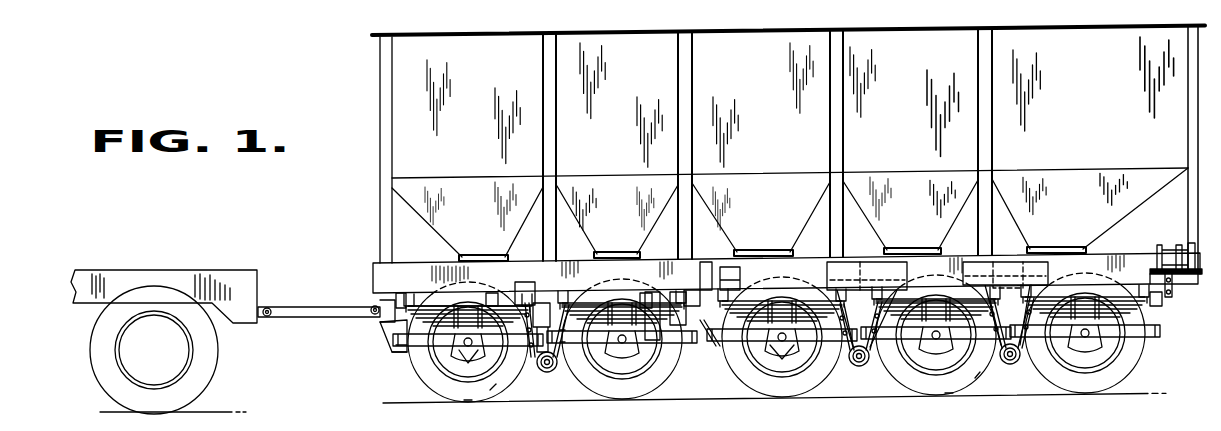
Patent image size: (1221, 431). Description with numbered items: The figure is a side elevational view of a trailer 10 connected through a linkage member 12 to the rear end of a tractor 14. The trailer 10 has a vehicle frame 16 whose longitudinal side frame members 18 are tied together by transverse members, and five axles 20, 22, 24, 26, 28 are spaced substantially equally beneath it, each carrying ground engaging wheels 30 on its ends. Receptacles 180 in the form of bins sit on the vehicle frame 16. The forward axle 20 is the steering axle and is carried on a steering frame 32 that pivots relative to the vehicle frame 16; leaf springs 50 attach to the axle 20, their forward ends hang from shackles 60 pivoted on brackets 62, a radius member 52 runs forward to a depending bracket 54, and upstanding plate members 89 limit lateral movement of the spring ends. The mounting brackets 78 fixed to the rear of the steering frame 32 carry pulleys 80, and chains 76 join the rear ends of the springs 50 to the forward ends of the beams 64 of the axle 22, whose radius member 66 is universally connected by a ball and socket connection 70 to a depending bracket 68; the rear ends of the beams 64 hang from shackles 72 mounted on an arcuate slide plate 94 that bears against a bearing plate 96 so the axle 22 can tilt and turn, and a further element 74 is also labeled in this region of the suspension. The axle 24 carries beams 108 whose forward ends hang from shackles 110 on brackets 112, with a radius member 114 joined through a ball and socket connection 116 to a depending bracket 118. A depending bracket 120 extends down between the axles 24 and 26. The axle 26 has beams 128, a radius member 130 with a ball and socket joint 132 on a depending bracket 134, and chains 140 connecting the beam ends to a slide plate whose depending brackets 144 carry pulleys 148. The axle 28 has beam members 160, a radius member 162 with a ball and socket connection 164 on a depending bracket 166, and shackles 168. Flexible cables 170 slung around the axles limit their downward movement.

The trailer 10 is at (377, 225).
The linkage member 12 is at (307, 307).
The tractor 14 is at (182, 280).
The vehicle frame 16 is at (740, 262).
The side frame members 18 is at (592, 296).
The steering axle 20 is at (455, 355).
The axle 22 is at (608, 370).
The axle 24 is at (772, 352).
The axle 26 is at (915, 350).
The axle 28 is at (1077, 347).
The ground engaging wheels 30 is at (468, 401).
The steering frame 32 is at (379, 302).
The leaf springs 50 is at (490, 295).
The radius member 52 is at (404, 352).
The depending bracket 54 is at (380, 340).
The shackles 60 is at (425, 301).
The brackets 62 is at (400, 303).
The beams 64 is at (643, 293).
The radius member 66 is at (595, 380).
The depending bracket 68 is at (468, 364).
The ball and socket connection 70 is at (493, 388).
The shackle 72 is at (691, 290).
The hanger 74 is at (683, 345).
The chains 76 is at (522, 352).
The mounting bracket 78 is at (540, 305).
The pulley 80 is at (550, 372).
The plate members 89 is at (530, 300).
The slide plate 94 is at (1177, 277).
The bearing plate 96 is at (1192, 246).
The beams 108 is at (786, 358).
The shackles 110 is at (750, 288).
The brackets 112 is at (738, 285).
The radius member 114 is at (740, 362).
The ball and socket connection 116 is at (664, 356).
The depending bracket 118 is at (640, 400).
The depending bracket 120 is at (863, 267).
The beam 128 is at (908, 288).
The radius member 130 is at (866, 366).
The ball and socket joint 132 is at (860, 372).
The depending bracket 134 is at (826, 352).
The chains 140 is at (1048, 280).
The depending brackets 144 is at (1038, 257).
The pulleys 148 is at (1013, 364).
The beam members 160 is at (1125, 262).
The radius member 162 is at (1063, 363).
The ball and socket connection 164 is at (982, 347).
The depending bracket 166 is at (978, 377).
The shackle 168 is at (1153, 303).
The cables 170 is at (468, 365).
The receptacles 180 is at (790, 27).